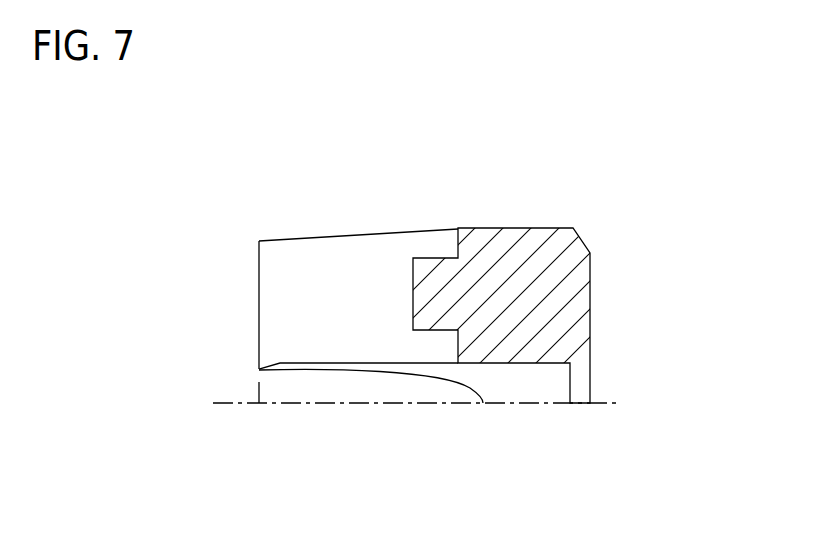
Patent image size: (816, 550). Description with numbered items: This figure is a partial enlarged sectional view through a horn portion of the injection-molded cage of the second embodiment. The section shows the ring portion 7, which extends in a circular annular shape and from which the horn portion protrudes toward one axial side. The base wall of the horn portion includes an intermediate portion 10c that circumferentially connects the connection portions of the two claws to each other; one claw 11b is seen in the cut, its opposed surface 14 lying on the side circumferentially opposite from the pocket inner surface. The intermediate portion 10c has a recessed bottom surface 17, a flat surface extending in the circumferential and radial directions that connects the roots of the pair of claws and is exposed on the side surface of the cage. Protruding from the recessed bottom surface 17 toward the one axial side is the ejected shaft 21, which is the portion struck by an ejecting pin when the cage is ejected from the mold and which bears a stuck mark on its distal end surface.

The ring portion 7 is at (552, 303).
The intermediate portion 10c is at (483, 322).
The claw 11b is at (259, 241).
The opposed surface 14 is at (302, 260).
The recessed bottom surface 17 is at (456, 248).
The ejected shaft 21 is at (422, 293).